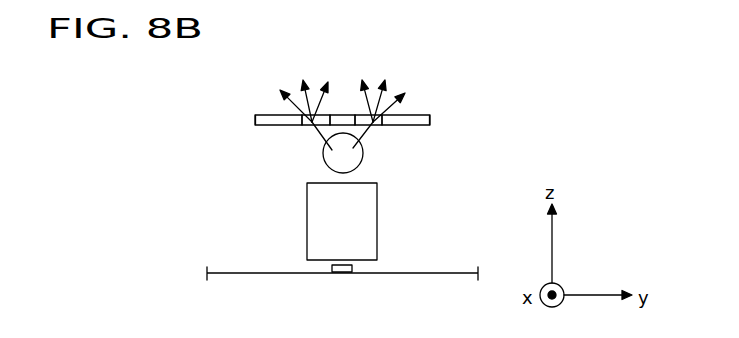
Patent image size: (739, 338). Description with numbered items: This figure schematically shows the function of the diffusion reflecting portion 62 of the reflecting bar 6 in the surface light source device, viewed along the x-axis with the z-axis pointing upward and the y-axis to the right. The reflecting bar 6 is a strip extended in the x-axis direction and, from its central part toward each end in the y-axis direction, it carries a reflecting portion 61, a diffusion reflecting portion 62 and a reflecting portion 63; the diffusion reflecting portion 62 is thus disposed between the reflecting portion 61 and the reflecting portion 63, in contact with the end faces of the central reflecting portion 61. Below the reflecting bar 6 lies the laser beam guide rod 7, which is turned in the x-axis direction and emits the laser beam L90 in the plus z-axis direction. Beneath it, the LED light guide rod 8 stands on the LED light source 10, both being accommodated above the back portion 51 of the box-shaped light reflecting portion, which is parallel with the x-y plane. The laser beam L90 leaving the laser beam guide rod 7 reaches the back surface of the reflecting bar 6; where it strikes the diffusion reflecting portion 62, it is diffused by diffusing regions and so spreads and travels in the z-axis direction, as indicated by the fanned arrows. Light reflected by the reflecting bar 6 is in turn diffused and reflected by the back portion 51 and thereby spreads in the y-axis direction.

The reflecting bar 6 is at (246, 120).
The reflecting portion 61 is at (347, 114).
The diffusion reflecting portion 62 is at (377, 124).
The reflecting portion 63 is at (275, 114).
The laser beam guide rod 7 is at (349, 158).
The laser beam L90 is at (323, 153).
The LED light guide rod 8 is at (313, 245).
The LED light source 10 is at (342, 273).
The back portion 51 is at (463, 270).